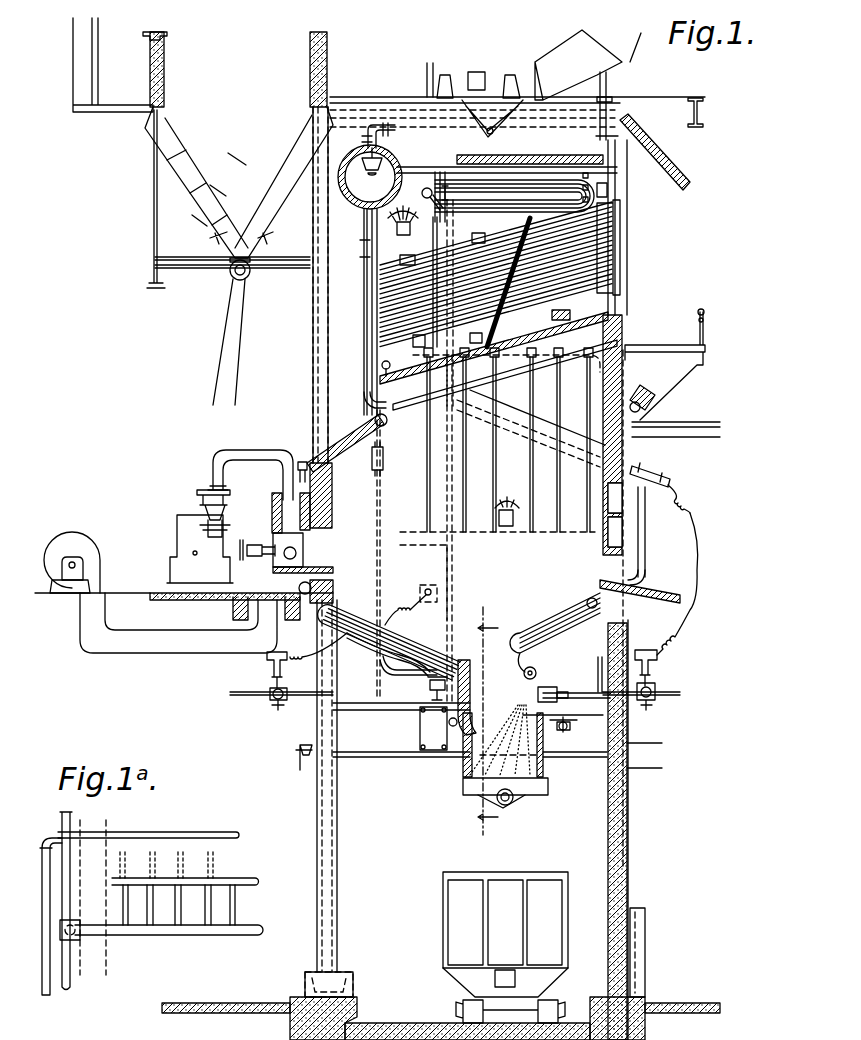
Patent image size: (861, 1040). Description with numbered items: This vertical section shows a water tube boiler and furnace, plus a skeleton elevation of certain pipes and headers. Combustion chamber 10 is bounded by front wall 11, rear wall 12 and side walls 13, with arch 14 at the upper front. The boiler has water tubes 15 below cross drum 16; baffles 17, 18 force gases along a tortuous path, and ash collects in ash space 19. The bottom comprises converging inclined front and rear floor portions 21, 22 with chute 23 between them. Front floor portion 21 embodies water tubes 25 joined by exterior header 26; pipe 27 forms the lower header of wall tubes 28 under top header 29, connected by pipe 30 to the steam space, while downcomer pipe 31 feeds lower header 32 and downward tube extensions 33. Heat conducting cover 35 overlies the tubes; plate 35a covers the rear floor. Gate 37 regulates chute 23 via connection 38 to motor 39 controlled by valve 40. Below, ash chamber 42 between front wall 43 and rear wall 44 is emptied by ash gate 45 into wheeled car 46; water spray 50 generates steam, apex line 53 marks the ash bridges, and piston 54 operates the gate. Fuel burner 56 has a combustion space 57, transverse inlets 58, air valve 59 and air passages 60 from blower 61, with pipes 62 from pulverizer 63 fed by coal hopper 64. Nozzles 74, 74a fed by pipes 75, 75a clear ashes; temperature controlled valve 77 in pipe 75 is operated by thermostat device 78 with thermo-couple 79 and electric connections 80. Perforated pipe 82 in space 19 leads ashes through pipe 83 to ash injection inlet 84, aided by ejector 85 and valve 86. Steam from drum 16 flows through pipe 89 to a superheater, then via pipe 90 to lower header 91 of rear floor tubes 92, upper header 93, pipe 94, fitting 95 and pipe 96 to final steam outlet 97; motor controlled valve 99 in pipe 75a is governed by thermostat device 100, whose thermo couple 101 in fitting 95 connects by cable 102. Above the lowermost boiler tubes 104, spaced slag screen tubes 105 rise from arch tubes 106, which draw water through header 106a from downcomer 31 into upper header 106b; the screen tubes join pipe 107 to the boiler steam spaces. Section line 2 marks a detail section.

In FIG. 1, the section line 2 is at (487, 723).
In FIG. 1, the combustion chamber 10 is at (489, 559).
In FIG. 1, the front wall 11 is at (333, 511).
In FIG. 1, the rear wall 12 is at (635, 454).
In FIG. 1, the side walls 13 is at (588, 525).
In FIG. 1A, the side walls 13 is at (108, 968).
In FIG. 1, the arch 14 is at (343, 434).
In FIG. 1, the water tubes 15 is at (605, 240).
In FIG. 1, the drum 16 is at (352, 201).
In FIG. 1, the first baffle 17 is at (500, 324).
In FIG. 1, the second baffle 18 is at (430, 240).
In FIG. 1, the ash space 19 is at (397, 352).
In FIG. 1, the front floor portion 21 is at (390, 649).
In FIG. 1, the rear floor portion 22 is at (560, 633).
In FIG. 1, the chute 23 is at (479, 692).
In FIG. 1, the water tubes 25 is at (417, 648).
In FIG. 1, the exterior header 26 is at (310, 621).
In FIG. 1, the pipe 27 is at (398, 531).
In FIG. 1, the wall tubes 28 is at (521, 487).
In FIG. 1, the top header 29 is at (523, 354).
In FIG. 1, the pipe 30 is at (561, 304).
In FIG. 1, the pipe 31 is at (363, 248).
In FIG. 1A, the pipe 31 is at (72, 990).
In FIG. 1, the lower header 32 is at (440, 758).
In FIG. 1, the tube extensions 33 is at (432, 698).
In FIG. 1, the heat conducting cover 35 is at (412, 641).
In FIG. 1, the conducting plate 35a is at (553, 628).
In FIG. 1, the gate 37 is at (481, 724).
In FIG. 1, the connection 38 is at (553, 685).
In FIG. 1, the motor 39 is at (562, 694).
In FIG. 1, the valve 40 is at (572, 731).
In FIG. 1, the ash chamber 42 is at (503, 741).
In FIG. 1, the front wall 43 is at (470, 760).
In FIG. 1, the rear wall 44 is at (546, 773).
In FIG. 1, the ash gate 45 is at (528, 794).
In FIG. 1, the ash receptacle 46 is at (440, 918).
In FIG. 1, the water spray 50 is at (563, 735).
In FIG. 1, the apex line 53 is at (506, 724).
In FIG. 1, the piston 54 is at (508, 809).
In FIG. 1, the fuel burner 56 is at (262, 540).
In FIG. 1, the mixing and combustion space 57 is at (310, 554).
In FIG. 1, the transverse inlets 58 is at (277, 493).
In FIG. 1, the air valve device 59 is at (250, 563).
In FIG. 1, the air passages 60 is at (170, 630).
In FIG. 1, the blower 61 is at (110, 521).
In FIG. 1, the pipes 62 is at (222, 456).
In FIG. 1, the pulverizer 63 is at (172, 538).
In FIG. 1, the coal hopper 64 is at (203, 211).
In FIG. 1, the jets 74 is at (343, 608).
In FIG. 1, the jets 74a is at (590, 600).
In FIG. 1, the pipe 75 is at (255, 696).
In FIG. 1, the pipe 75a is at (670, 694).
In FIG. 1, the temperature controlled valve 77 is at (268, 662).
In FIG. 1, the thermostat device 78 is at (427, 589).
In FIG. 1, the thermo-couple 79 is at (433, 592).
In FIG. 1, the electric connections 80 is at (303, 664).
In FIG. 1, the perforated pipe 82 is at (385, 364).
In FIG. 1A, the perforated pipe 82 is at (165, 833).
In FIG. 1, the ash pipe 83 is at (368, 414).
In FIG. 1A, the ash pipe 83 is at (42, 972).
In FIG. 1, the ash injection inlet 84 is at (333, 601).
In FIG. 1, the ejector device 85 is at (332, 484).
In FIG. 1, the exterior valve 86 is at (302, 461).
In FIG. 1, the pipe 89 is at (369, 125).
In FIG. 1, the pipe 90 is at (447, 549).
In FIG. 1, the lower header 91 is at (537, 670).
In FIG. 1, the floor tubes 92 is at (533, 623).
In FIG. 1, the upper header 93 is at (643, 568).
In FIG. 1, the pipe 94 is at (647, 538).
In FIG. 1, the fitting 95 is at (647, 491).
In FIG. 1, the pipe 96 is at (532, 434).
In FIG. 1, the final steam outlet 97 is at (427, 188).
In FIG. 1, the motor controlled valve 99 is at (657, 669).
In FIG. 1, the thermostat device 100 is at (675, 483).
In FIG. 1, the thermo couple 101 is at (587, 471).
In FIG. 1, the electric cable 102 is at (700, 558).
In FIG. 1, the lowermost tier of boiler tubes 104 is at (598, 346).
In FIG. 1, the slag screen tubes 105 is at (500, 388).
In FIG. 1A, the slag screen tubes 105 is at (215, 872).
In FIG. 1, the arch tubes 106 is at (384, 437).
In FIG. 1A, the arch tubes 106 is at (232, 907).
In FIG. 1A, the header 106a is at (220, 938).
In FIG. 1A, the upper header 106b is at (250, 880).
In FIG. 1, the pipe 107 is at (632, 347).